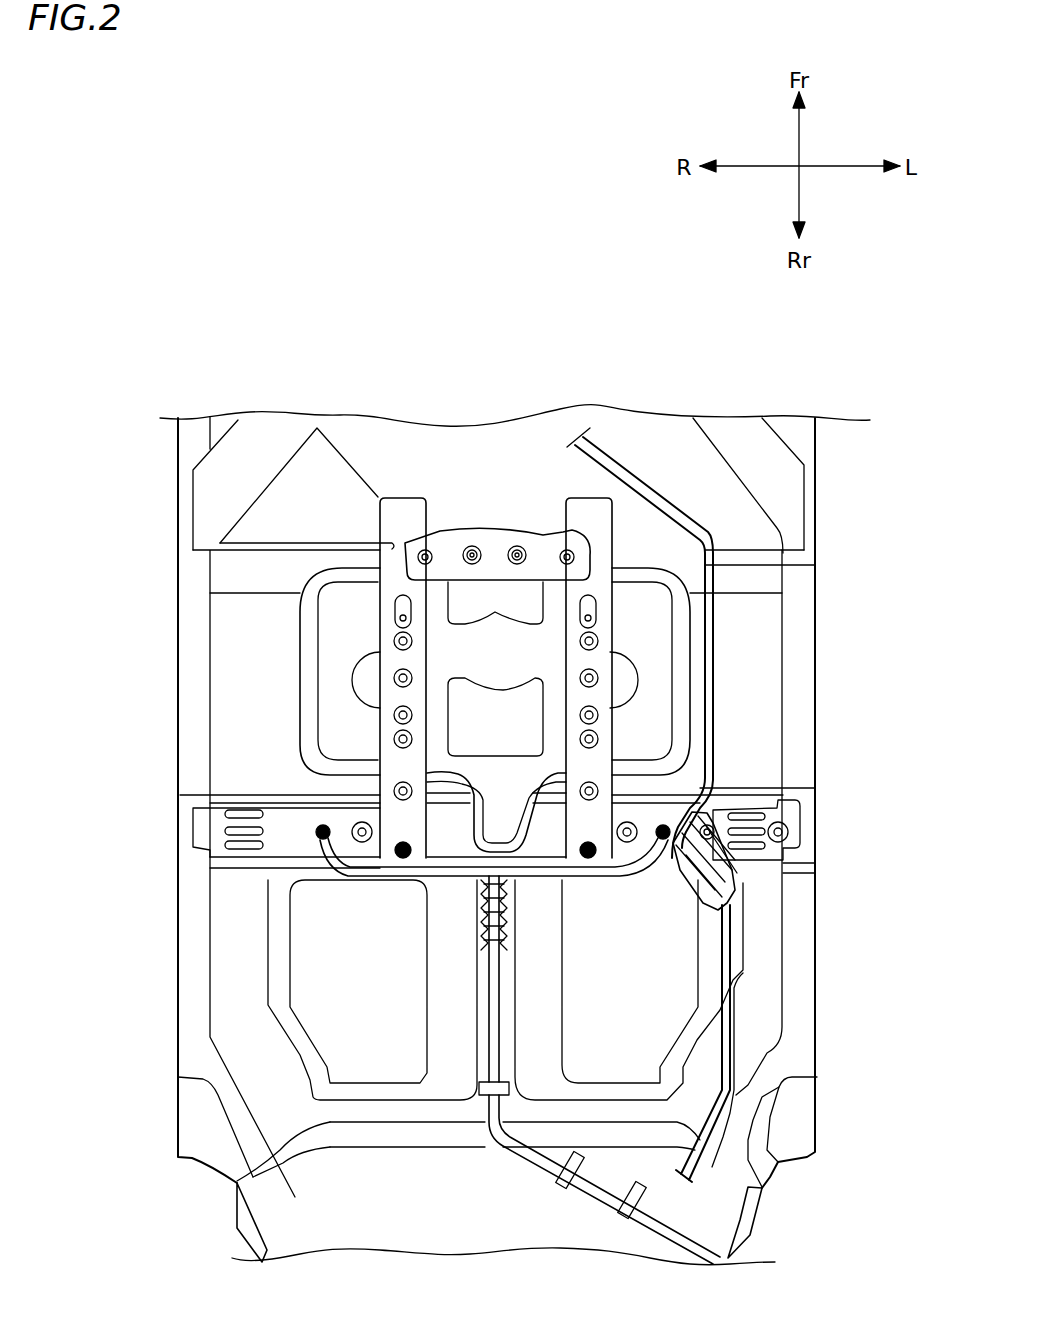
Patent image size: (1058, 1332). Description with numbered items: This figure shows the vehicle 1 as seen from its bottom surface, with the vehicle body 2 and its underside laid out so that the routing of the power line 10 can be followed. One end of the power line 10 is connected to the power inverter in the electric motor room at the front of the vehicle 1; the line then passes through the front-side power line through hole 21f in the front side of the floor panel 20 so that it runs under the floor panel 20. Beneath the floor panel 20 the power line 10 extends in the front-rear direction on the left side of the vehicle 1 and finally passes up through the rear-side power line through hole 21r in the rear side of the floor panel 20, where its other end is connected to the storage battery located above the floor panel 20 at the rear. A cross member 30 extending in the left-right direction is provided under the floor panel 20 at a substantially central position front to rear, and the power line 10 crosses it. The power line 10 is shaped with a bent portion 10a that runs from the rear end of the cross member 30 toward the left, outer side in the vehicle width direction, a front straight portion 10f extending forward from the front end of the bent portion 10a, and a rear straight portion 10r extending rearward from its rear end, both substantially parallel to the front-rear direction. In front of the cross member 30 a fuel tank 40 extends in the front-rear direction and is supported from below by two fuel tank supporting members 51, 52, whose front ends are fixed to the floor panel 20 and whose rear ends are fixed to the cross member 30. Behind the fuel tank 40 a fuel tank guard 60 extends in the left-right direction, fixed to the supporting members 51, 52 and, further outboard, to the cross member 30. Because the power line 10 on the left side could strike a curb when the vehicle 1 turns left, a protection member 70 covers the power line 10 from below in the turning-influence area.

The vehicle 1 is at (697, 388).
The vehicle body 2 is at (768, 462).
The power line 10 is at (713, 688).
The front straight portion 10f is at (722, 786).
The rear straight portion 10r is at (743, 973).
The bent portion 10a is at (743, 880).
The floor panel 20 is at (408, 447).
The front-side power line through hole 21f is at (577, 440).
The rear-side power line through hole 21r is at (690, 1213).
The cross member 30 is at (787, 802).
The fuel tank 40 is at (650, 640).
The fuel tank supporting member 51 is at (815, 567).
The fuel tank supporting member 52 is at (392, 543).
The fuel tank guard 60 is at (347, 873).
The protection member 70 is at (783, 860).